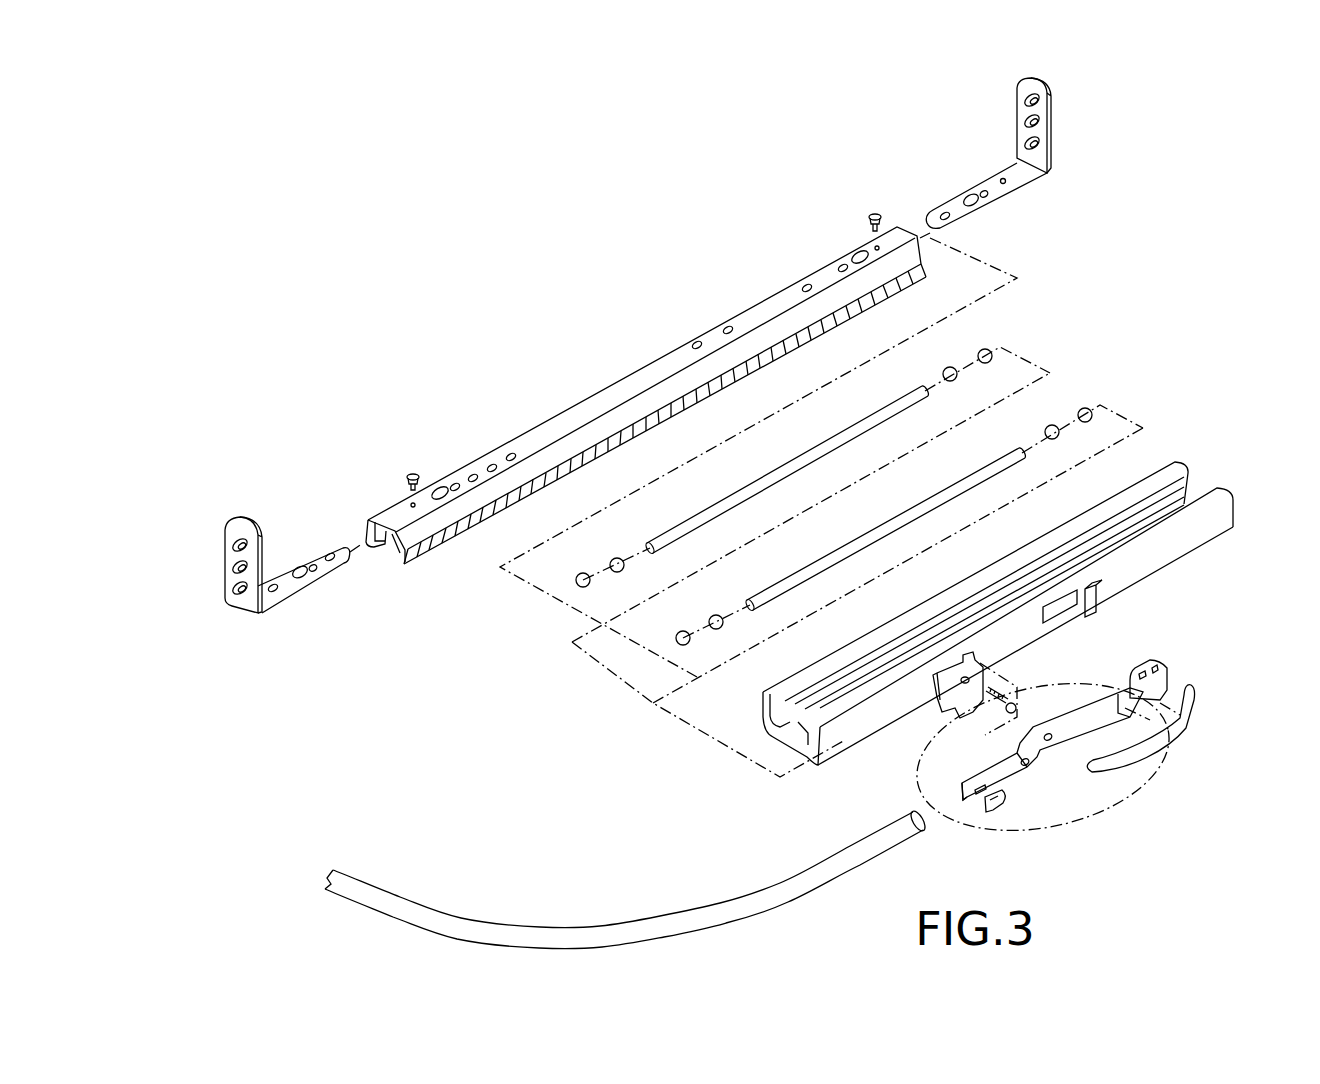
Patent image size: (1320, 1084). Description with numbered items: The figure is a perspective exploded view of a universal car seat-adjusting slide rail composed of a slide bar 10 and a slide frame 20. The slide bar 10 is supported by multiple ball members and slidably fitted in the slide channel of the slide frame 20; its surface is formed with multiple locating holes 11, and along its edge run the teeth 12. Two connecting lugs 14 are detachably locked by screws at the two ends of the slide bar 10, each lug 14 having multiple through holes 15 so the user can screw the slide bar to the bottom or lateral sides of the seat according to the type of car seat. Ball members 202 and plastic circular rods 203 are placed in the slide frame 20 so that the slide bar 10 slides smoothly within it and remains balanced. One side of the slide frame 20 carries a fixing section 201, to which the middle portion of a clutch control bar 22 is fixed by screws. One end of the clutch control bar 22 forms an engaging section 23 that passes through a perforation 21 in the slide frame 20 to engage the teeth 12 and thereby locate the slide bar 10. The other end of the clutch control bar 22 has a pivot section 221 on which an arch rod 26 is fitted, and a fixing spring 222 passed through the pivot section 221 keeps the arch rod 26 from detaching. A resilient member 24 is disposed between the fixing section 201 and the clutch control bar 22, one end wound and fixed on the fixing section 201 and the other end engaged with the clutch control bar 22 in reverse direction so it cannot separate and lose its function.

The slide bar 10 is at (625, 382).
The locating holes 11 is at (497, 447).
The teeth 12 is at (705, 398).
The connecting lug 14 is at (287, 570).
The through holes 15 is at (233, 587).
The slide frame 20 is at (1019, 591).
The perforation 21 is at (1063, 608).
The clutch control bar 22 is at (1043, 783).
The engaging section 23 is at (1167, 664).
The resilient member 24 is at (1167, 733).
The arch rod 26 is at (797, 893).
The fixing section 201 is at (940, 712).
The ball members 202 is at (616, 558).
The plastic circular rods 203 is at (837, 437).
The pivot section 221 is at (973, 793).
The fixing spring 222 is at (1010, 802).